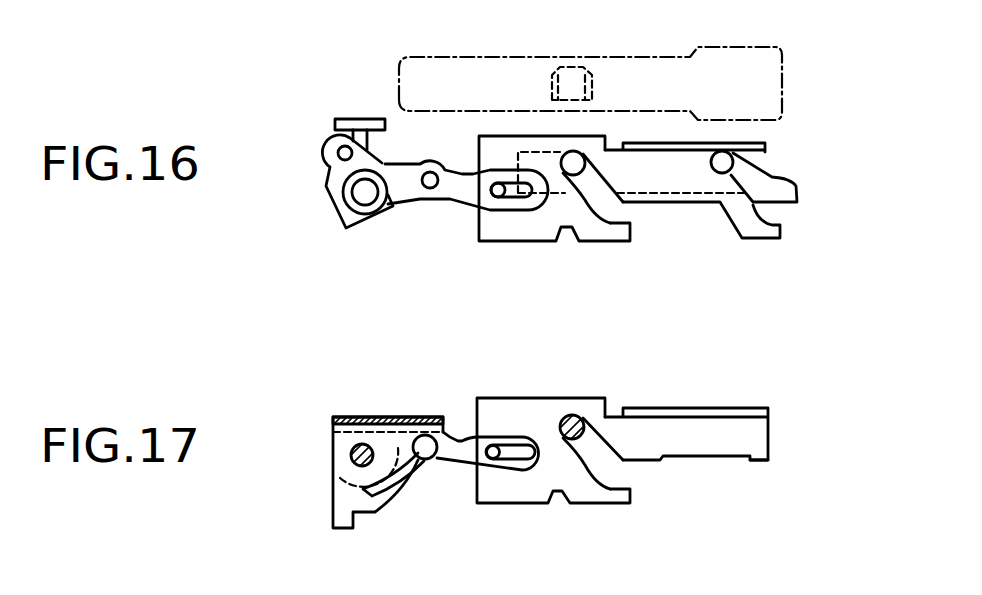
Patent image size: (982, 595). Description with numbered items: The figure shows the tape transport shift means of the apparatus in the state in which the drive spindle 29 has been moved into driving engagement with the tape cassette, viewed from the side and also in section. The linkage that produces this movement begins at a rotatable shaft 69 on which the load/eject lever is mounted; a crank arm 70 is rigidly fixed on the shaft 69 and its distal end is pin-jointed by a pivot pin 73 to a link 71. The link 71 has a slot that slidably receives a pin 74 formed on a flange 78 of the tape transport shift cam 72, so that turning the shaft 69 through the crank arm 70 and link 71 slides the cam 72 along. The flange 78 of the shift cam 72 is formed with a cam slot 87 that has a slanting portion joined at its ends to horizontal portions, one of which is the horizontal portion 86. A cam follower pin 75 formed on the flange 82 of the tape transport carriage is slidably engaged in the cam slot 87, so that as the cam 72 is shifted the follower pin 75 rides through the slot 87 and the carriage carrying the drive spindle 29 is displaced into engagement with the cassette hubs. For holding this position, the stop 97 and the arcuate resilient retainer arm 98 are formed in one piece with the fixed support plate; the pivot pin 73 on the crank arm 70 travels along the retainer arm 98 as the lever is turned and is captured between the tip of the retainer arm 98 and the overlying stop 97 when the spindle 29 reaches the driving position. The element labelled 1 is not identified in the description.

In FIG. 16, the camera body 1 is at (782, 102).
In FIG. 16, the drive spindle 29 is at (562, 68).
In FIG. 17, the shaft 69 is at (362, 442).
In FIG. 16, the crank arm 70 is at (397, 208).
In FIG. 17, the crank arm 70 is at (392, 470).
In FIG. 16, the link 71 is at (450, 202).
In FIG. 17, the link 71 is at (458, 440).
In FIG. 16, the tape transport shift cam 72 is at (780, 238).
In FIG. 17, the tape transport shift cam 72 is at (768, 430).
In FIG. 17, the pivot pin 73 is at (430, 457).
In FIG. 16, the pin 74 is at (497, 197).
In FIG. 17, the pin 74 is at (493, 445).
In FIG. 16, the cam follower pin 75 is at (730, 162).
In FIG. 17, the cam follower pin 75 is at (569, 414).
In FIG. 17, the flange 78 is at (760, 447).
In FIG. 16, the flange 82 is at (753, 202).
In FIG. 16, the horizontal portion 86 is at (558, 168).
In FIG. 16, the cam slot 87 is at (600, 193).
In FIG. 17, the cam slot 87 is at (597, 453).
In FIG. 17, the stop 97 is at (400, 430).
In FIG. 17, the resilient retainer arm 98 is at (410, 478).